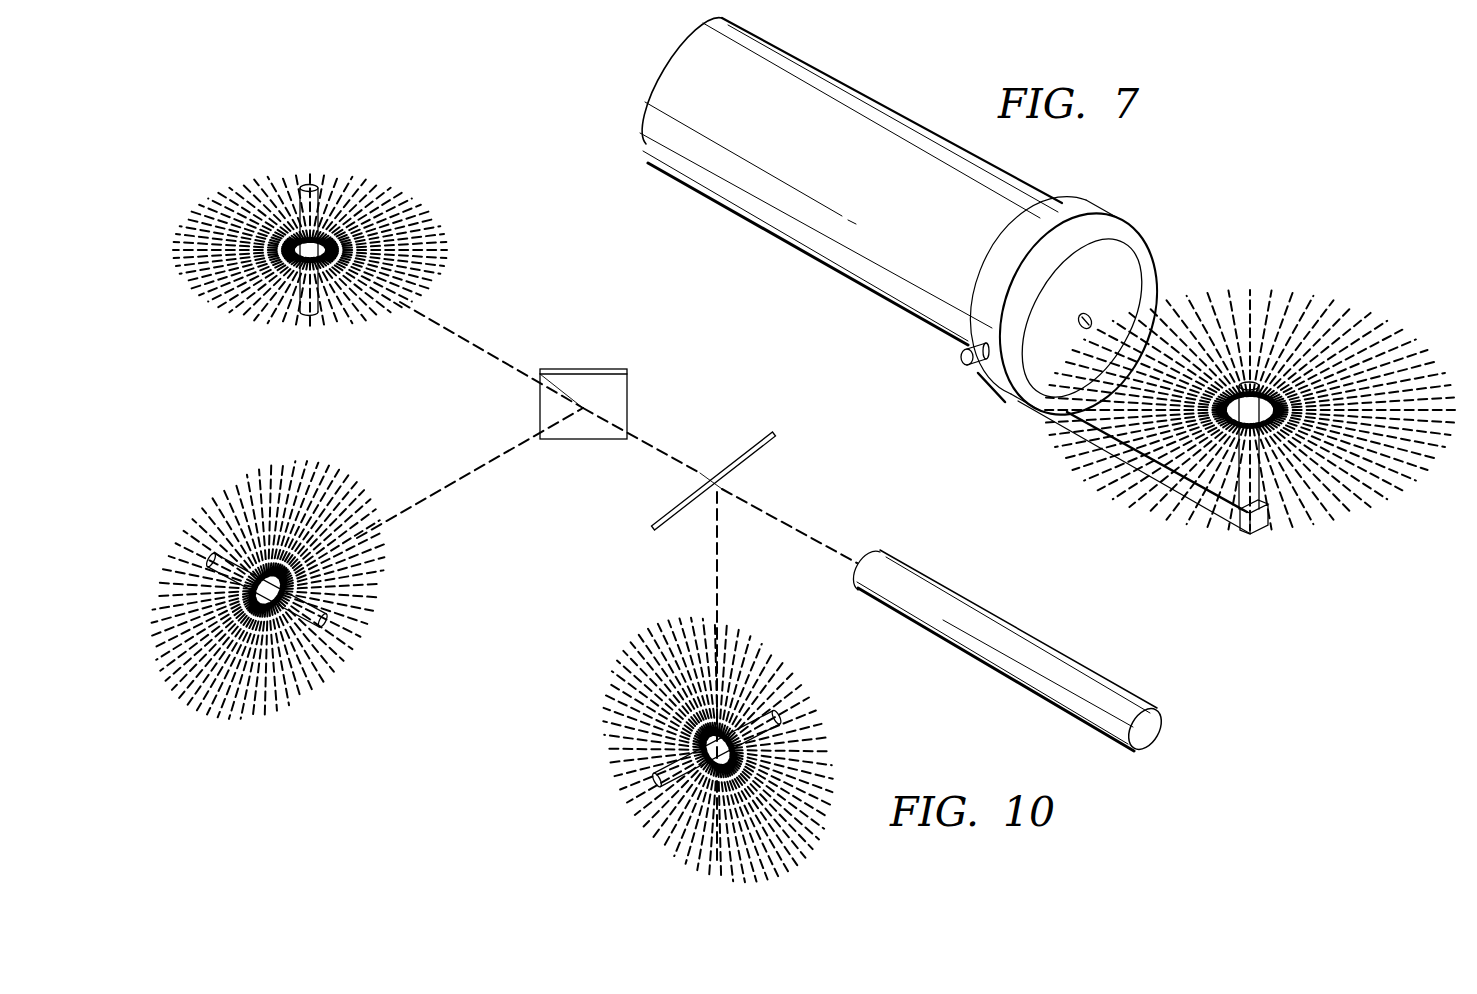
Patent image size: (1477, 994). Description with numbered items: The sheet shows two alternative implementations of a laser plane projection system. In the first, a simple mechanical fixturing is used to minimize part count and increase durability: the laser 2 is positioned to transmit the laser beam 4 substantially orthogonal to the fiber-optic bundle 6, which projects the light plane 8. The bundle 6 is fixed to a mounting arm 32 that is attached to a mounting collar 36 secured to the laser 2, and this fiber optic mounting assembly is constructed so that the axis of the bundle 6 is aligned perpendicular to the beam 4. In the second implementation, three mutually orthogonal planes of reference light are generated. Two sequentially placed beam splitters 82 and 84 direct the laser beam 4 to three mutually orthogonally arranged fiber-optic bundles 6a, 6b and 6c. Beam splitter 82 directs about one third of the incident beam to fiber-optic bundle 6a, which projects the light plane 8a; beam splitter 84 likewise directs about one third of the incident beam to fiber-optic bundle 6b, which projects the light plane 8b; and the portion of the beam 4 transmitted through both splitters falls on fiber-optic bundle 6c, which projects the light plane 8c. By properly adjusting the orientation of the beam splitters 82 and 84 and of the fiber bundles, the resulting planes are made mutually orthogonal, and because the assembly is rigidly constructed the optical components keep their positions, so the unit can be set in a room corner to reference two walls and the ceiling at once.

In FIG. 7, the laser 2 is at (888, 110).
In FIG. 10, the laser 2 is at (942, 638).
In FIG. 7, the laser beam 4 is at (1103, 313).
In FIG. 10, the laser beam 4 is at (806, 544).
In FIG. 7, the fiber-optic bundle 6 is at (1243, 515).
In FIG. 7, the light plane 8 is at (1444, 358).
In FIG. 7, the mounting arm 32 is at (1262, 520).
In FIG. 7, the mounting collar 36 is at (997, 388).
In FIG. 10, the beam splitter 82 is at (745, 447).
In FIG. 10, the beam splitter 84 is at (597, 370).
In FIG. 10, the fiber-optic bundle 6a is at (657, 785).
In FIG. 10, the fiber-optic bundle 6b is at (326, 626).
In FIG. 10, the fiber-optic bundle 6c is at (308, 318).
In FIG. 10, the light plane 8a is at (709, 868).
In FIG. 10, the light plane 8b is at (282, 716).
In FIG. 10, the light plane 8c is at (448, 222).